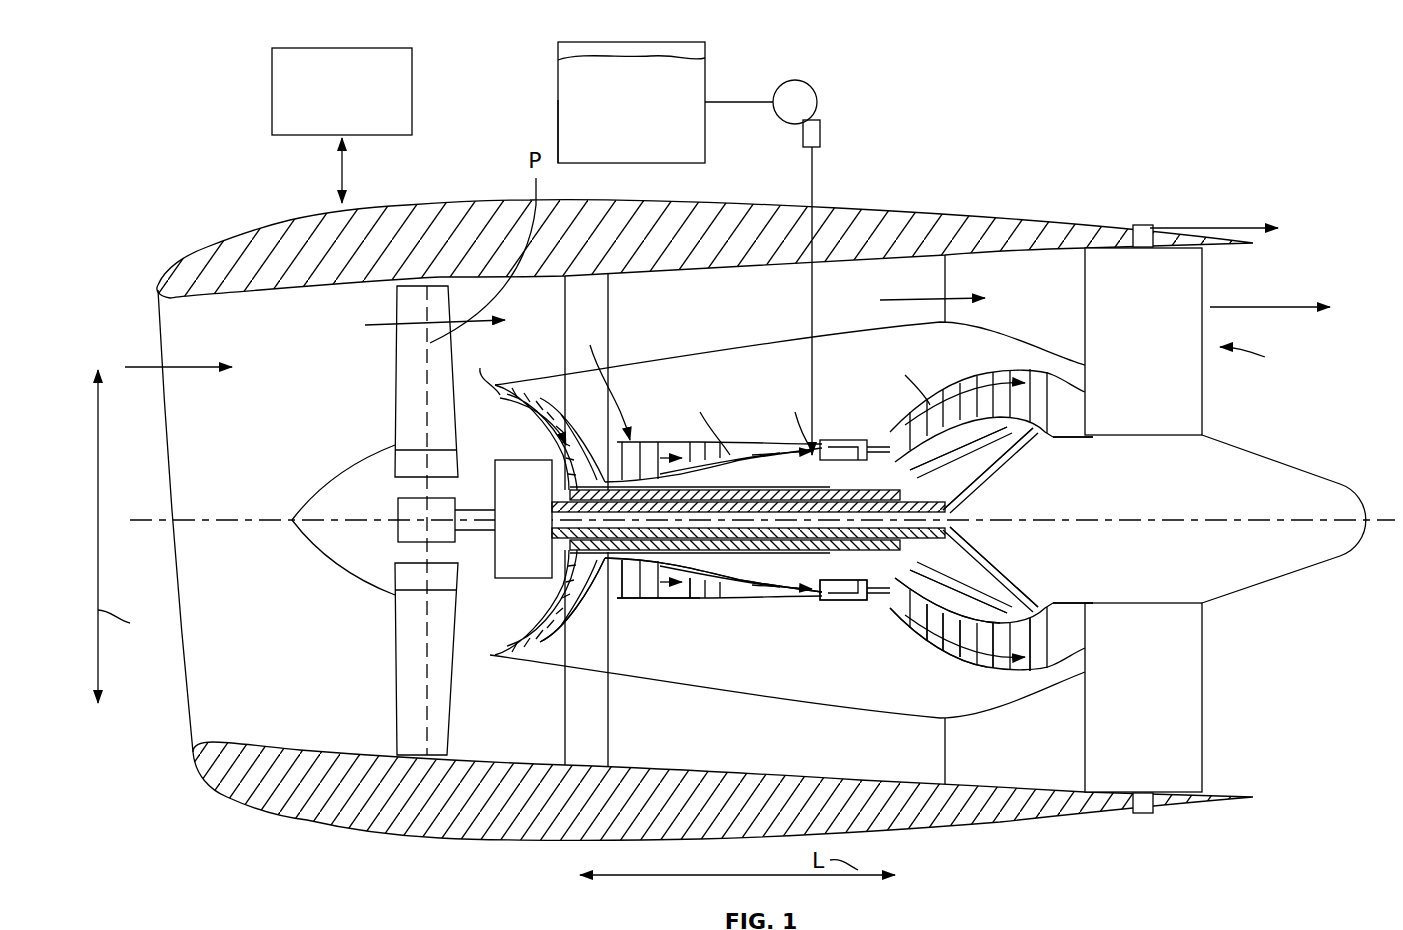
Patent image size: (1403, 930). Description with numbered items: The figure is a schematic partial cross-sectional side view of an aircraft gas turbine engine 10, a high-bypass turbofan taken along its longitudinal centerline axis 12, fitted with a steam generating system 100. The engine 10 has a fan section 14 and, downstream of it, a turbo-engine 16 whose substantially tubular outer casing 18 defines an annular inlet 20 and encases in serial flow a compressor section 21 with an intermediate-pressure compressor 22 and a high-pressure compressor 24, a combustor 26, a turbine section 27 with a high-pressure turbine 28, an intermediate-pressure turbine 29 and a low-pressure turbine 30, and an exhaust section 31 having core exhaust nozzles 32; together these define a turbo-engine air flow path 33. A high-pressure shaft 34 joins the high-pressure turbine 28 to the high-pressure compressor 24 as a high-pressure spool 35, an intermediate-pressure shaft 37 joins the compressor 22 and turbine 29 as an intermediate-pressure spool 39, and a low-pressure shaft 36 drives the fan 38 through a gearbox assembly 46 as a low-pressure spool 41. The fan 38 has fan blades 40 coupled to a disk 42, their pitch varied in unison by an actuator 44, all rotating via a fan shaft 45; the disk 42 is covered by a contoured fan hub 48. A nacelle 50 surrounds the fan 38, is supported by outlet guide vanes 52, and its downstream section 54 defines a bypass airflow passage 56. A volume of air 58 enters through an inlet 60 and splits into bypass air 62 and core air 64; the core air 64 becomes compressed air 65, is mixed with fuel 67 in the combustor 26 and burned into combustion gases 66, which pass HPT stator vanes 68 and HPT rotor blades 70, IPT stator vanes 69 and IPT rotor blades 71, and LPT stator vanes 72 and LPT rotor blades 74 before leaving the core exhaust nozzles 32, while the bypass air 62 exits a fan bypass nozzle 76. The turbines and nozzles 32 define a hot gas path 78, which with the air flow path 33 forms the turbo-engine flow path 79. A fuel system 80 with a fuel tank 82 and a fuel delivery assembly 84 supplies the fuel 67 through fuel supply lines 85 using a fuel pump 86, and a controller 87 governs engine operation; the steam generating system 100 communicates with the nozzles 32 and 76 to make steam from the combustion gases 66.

The aircraft gas turbine engine 10 is at (272, 211).
The longitudinal centerline axis 12 is at (1192, 518).
The fan section 14 is at (370, 303).
The turbo-engine 16 is at (1032, 348).
The outer casing 18 is at (790, 700).
The annular inlet 20 is at (530, 640).
The compressor section 21 is at (690, 385).
The intermediate-pressure compressor 22 is at (545, 612).
The high-pressure compressor 24 is at (640, 595).
The combustor 26 is at (835, 598).
The turbine section 27 is at (925, 372).
The high-pressure turbine 28 is at (975, 588).
The intermediate-pressure turbine 29 is at (948, 650).
The low-pressure turbine 30 is at (1035, 660).
The exhaust section 31 is at (1072, 442).
The core exhaust nozzles 32 is at (1143, 224).
The turbo-engine air flow path 33 is at (630, 595).
The high-pressure shaft 34 is at (794, 421).
The high-pressure spool 35 is at (714, 424).
The low-pressure shaft 36 is at (990, 455).
The intermediate-pressure shaft 37 is at (955, 495).
The fan 38 is at (283, 645).
The intermediate-pressure spool 39 is at (712, 590).
The fan blades 40 is at (393, 663).
The low-pressure spool 41 is at (600, 640).
The disk 42 is at (410, 470).
The actuator 44 is at (398, 522).
The fan shaft 45 is at (495, 512).
The gearbox assembly 46 is at (535, 403).
The fan hub 48 is at (325, 552).
The nacelle 50 is at (415, 825).
The outlet guide vanes 52 is at (610, 335).
The downstream section 54 is at (968, 212).
The bypass airflow passage 56 is at (647, 520).
The volume of air 58 is at (210, 362).
The inlet 60 is at (180, 693).
The bypass air 62 is at (372, 327).
The core air 64 is at (483, 367).
The compressed air 65 is at (676, 455).
The combustion gases 66 is at (1230, 226).
The fuel 67 is at (685, 83).
The HPT stator vanes 68 is at (878, 605).
The IPT stator vanes 69 is at (928, 612).
The HPT rotor blades 70 is at (950, 560).
The IPT rotor blades 71 is at (968, 650).
The LPT stator vanes 72 is at (1012, 672).
The LPT rotor blades 74 is at (990, 668).
The fan bypass nozzle 76 is at (1258, 362).
The hot gas path 78 is at (907, 379).
The turbo-engine flow path 79 is at (603, 380).
The fuel system 80 is at (552, 48).
The fuel tank 82 is at (558, 100).
The fuel delivery assembly 84 is at (873, 103).
The fuel supply lines 85 is at (813, 175).
The fuel pump 86 is at (818, 100).
The controller 87 is at (272, 90).
The steam generating system 100 is at (1143, 520).